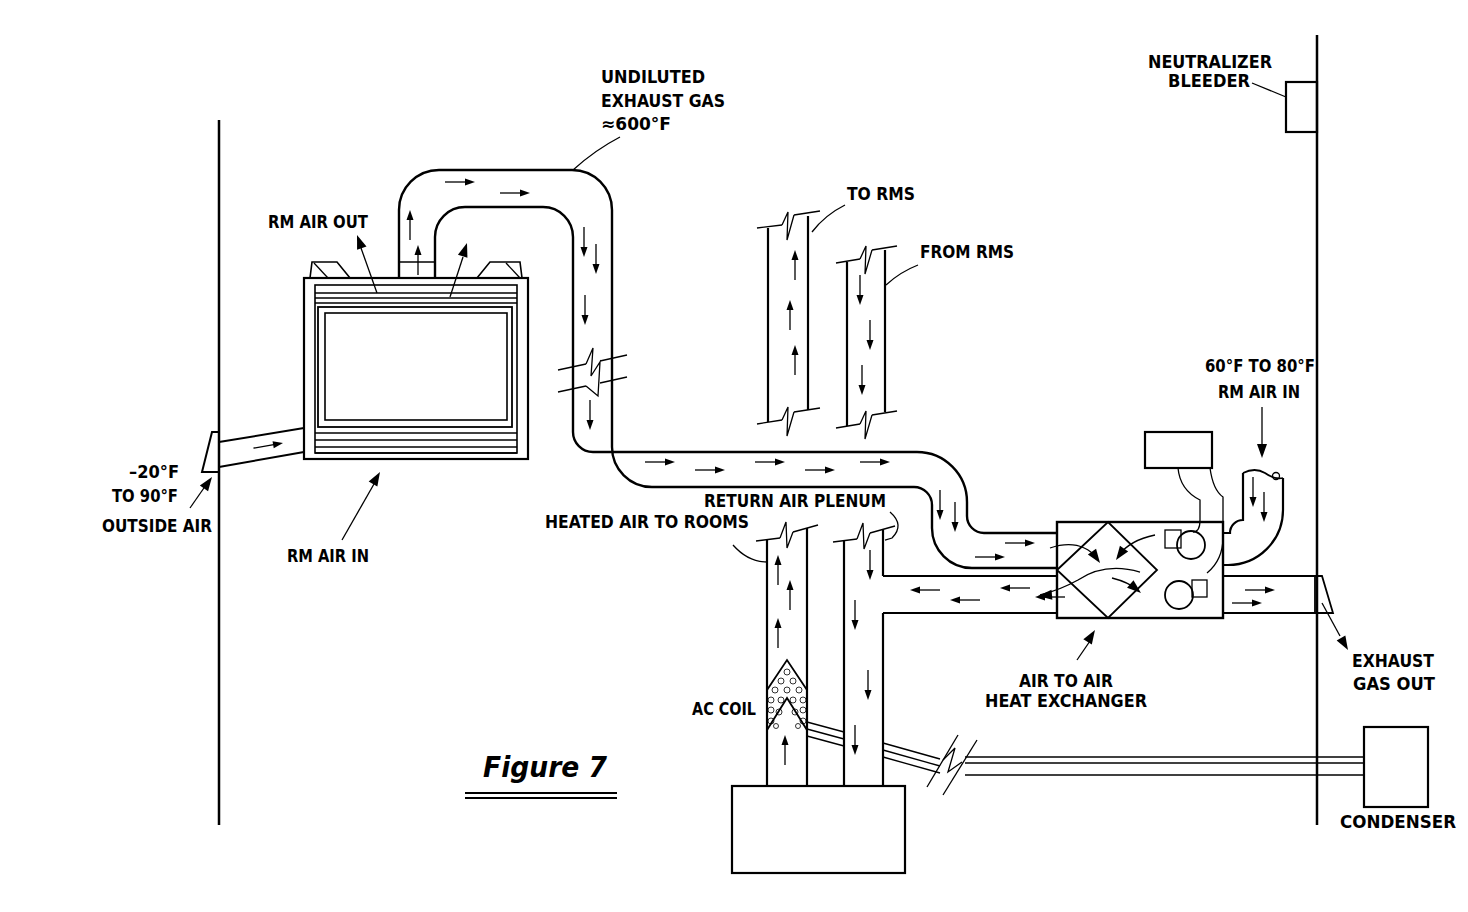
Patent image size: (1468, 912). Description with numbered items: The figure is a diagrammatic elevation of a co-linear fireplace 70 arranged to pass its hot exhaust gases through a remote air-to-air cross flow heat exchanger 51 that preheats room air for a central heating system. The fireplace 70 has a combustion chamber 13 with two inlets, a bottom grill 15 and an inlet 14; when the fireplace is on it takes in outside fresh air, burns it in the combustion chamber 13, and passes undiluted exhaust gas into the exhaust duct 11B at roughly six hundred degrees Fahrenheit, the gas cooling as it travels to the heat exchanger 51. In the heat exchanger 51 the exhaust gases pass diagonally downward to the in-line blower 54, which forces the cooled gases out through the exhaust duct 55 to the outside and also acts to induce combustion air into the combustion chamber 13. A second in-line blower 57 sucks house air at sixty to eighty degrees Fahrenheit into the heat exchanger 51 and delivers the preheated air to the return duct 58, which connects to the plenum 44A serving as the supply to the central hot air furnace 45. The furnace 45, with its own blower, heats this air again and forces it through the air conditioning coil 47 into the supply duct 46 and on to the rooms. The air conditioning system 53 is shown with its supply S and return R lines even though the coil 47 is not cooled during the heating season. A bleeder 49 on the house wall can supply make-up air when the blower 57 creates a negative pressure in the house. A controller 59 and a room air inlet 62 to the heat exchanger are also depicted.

The co-linear fireplace 70 is at (348, 161).
The combustion chamber 13 is at (498, 343).
The bottom grill 15 is at (390, 290).
The inlet 14 is at (463, 436).
The exhaust duct 11B is at (466, 170).
The supply duct 46 is at (768, 318).
The plenum 44A is at (886, 340).
The air conditioning coil 47 is at (767, 688).
The central hot air furnace 45 is at (905, 830).
The supply S is at (1037, 757).
The return R is at (1045, 775).
The air conditioning system 53 is at (1407, 766).
The bleeder 49 is at (1298, 122).
The air-to-air cross flow heat exchanger 51 is at (1134, 532).
The in-line blower 57 is at (1177, 557).
The in-line blower 54 is at (1187, 607).
The controller 59 is at (1183, 430).
The return duct 58 is at (983, 615).
The exhaust duct 55 is at (1242, 615).
The room air inlet duct 62 is at (1273, 540).